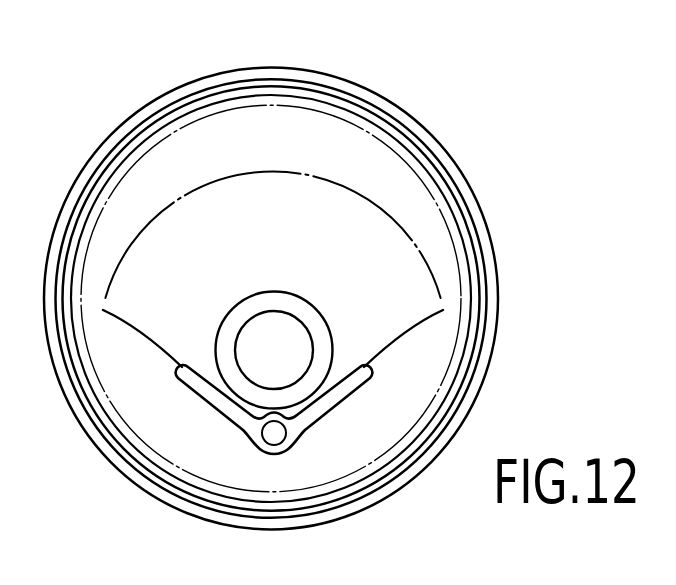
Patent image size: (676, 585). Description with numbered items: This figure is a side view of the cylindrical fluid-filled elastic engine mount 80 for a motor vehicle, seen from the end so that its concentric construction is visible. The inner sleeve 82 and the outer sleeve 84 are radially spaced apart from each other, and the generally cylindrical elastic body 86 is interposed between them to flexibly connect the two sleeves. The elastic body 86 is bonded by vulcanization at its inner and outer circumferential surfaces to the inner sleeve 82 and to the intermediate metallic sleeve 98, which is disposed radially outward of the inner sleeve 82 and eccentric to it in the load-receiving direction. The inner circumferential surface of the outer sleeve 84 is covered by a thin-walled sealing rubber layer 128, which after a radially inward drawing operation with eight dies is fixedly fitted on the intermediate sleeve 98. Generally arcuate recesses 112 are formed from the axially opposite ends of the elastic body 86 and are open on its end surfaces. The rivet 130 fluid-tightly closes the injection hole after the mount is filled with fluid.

The engine mount 80 is at (96, 85).
The inner sleeve 82 is at (223, 363).
The outer sleeve 84 is at (496, 298).
The elastic body 86 is at (402, 173).
The intermediate metallic sleeve 98 is at (340, 497).
The arcuate recess 112 is at (338, 400).
The sealing rubber layer 128 is at (163, 487).
The rivet 130 is at (278, 450).